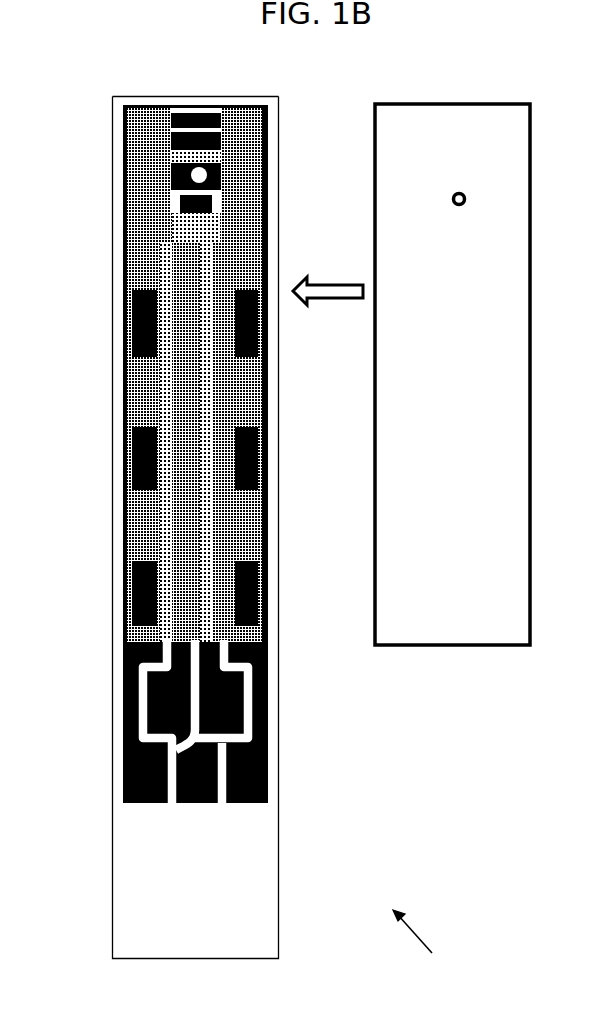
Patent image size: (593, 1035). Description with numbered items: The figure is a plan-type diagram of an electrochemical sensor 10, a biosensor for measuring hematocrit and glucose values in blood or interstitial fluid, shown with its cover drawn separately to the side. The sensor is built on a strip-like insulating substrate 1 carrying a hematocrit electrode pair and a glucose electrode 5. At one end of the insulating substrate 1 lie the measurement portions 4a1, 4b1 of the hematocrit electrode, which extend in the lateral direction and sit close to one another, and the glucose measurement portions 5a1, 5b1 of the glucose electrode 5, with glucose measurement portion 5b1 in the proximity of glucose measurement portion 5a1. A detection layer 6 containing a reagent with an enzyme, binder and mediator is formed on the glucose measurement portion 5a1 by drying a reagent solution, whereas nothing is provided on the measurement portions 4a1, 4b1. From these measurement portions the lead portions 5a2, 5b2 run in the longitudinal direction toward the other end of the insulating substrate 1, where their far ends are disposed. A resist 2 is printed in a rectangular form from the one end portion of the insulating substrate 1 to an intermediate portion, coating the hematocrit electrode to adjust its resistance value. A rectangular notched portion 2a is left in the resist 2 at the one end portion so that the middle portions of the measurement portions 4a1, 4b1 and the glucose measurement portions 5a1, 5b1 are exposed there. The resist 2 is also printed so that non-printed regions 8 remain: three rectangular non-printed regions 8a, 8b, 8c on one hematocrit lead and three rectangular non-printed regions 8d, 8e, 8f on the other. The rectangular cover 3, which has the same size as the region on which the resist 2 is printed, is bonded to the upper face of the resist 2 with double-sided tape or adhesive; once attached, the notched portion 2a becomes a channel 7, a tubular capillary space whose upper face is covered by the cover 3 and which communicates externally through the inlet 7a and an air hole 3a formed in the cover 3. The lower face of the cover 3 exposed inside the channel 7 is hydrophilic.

The insulating substrate 1 is at (117, 403).
The resist 2 is at (125, 243).
The notched portion 2a is at (262, 108).
The cover 3 is at (470, 645).
The air hole 3a is at (452, 200).
The measurement portion 4a1 is at (200, 107).
The measurement portion 4b1 is at (215, 107).
The glucose electrode 5 is at (133, 375).
The glucose measurement portion 5a1 is at (170, 168).
The glucose measurement portion 5b1 is at (170, 203).
The lead portion 5a2 is at (245, 697).
The lead portion 5b2 is at (267, 783).
The detection layer 6 is at (215, 157).
The channel 7 is at (180, 152).
The inlet 7a is at (182, 105).
The non-printed regions 8 is at (186, 464).
The non-printed region 8a is at (125, 322).
The non-printed region 8b is at (125, 455).
The non-printed region 8c is at (125, 590).
The non-printed region 8d is at (262, 327).
The non-printed region 8e is at (262, 460).
The non-printed region 8f is at (262, 590).
The electrochemical sensor 10 is at (425, 951).